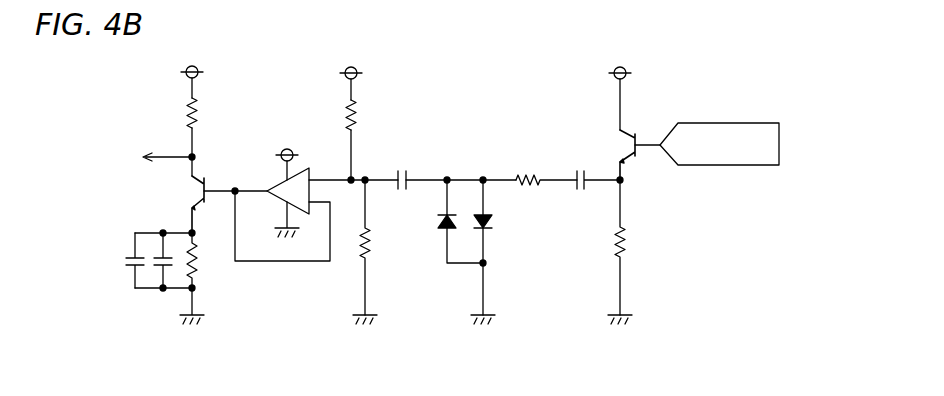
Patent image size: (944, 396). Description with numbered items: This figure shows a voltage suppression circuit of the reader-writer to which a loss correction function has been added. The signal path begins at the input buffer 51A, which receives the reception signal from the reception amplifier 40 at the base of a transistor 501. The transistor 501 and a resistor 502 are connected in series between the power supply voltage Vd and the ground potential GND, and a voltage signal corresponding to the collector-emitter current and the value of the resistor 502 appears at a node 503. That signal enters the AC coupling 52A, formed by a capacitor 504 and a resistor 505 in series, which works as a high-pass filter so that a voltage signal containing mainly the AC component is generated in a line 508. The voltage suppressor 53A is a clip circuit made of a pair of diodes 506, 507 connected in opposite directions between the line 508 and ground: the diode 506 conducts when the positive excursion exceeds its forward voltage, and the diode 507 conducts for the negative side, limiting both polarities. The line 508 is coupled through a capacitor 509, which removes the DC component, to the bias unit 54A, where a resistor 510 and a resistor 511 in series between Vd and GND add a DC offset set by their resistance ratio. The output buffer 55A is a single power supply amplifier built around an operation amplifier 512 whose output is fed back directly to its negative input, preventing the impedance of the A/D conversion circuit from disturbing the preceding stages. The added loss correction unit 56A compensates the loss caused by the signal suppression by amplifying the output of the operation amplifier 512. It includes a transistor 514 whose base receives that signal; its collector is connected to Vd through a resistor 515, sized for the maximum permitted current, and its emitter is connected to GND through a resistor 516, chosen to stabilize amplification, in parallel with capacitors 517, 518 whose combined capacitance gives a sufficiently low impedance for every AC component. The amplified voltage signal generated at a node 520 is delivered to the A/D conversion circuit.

The reception amplifier 40 is at (742, 123).
The input buffer 51A is at (647, 349).
The AC coupling 52A is at (513, 349).
The voltage suppressor 53A is at (397, 349).
The bias unit 54A is at (325, 349).
The output buffer 55A is at (225, 349).
The loss correction unit 56A is at (127, 349).
The transistor 501 is at (637, 136).
The resistor 502 is at (628, 249).
The node 503 is at (626, 180).
The capacitor 504 is at (580, 170).
The resistor 505 is at (527, 172).
The diode 506 is at (494, 223).
The diode 507 is at (438, 220).
The line 508 is at (466, 178).
The capacitor 509 is at (402, 170).
The resistor 510 is at (360, 112).
The resistor 511 is at (372, 250).
The operation amplifier 512 is at (276, 183).
The transistor 514 is at (205, 200).
The resistor 515 is at (200, 116).
The resistor 516 is at (200, 268).
The capacitor 517 is at (162, 255).
The capacitor 518 is at (133, 257).
The node 520 is at (190, 165).